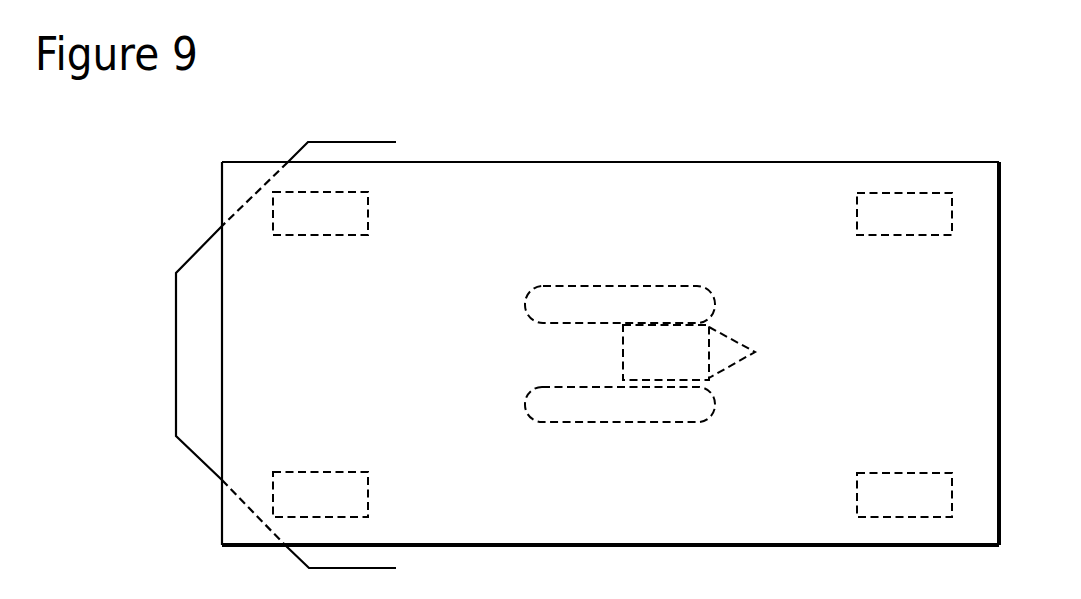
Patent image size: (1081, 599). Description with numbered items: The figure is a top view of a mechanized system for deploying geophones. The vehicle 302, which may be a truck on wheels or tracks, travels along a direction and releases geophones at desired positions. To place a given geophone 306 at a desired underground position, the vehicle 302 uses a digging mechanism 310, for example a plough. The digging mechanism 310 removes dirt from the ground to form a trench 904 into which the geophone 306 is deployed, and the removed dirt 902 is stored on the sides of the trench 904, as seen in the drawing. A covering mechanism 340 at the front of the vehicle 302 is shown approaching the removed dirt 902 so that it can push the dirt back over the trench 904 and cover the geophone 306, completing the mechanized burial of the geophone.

The vehicle 302 is at (957, 162).
The covering mechanism 340 is at (176, 303).
The removed dirt 902 is at (598, 297).
The trench 904 is at (552, 348).
The geophone 306 is at (655, 355).
The digging mechanism 310 is at (732, 365).